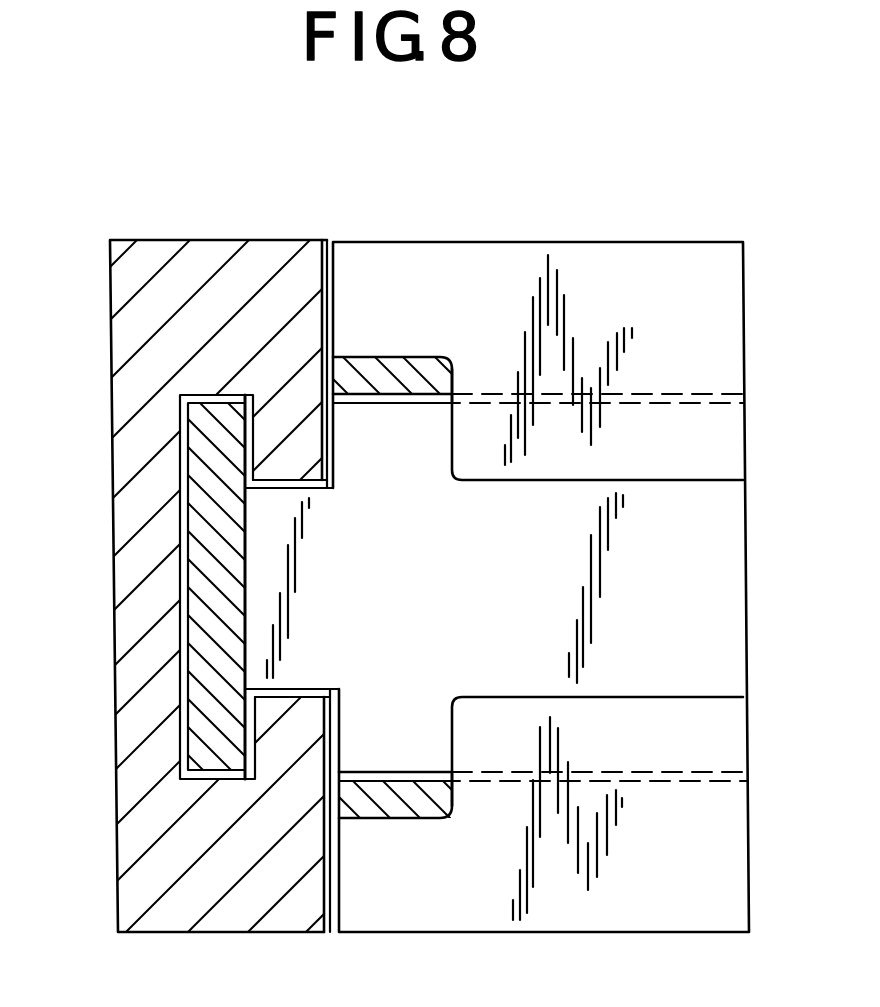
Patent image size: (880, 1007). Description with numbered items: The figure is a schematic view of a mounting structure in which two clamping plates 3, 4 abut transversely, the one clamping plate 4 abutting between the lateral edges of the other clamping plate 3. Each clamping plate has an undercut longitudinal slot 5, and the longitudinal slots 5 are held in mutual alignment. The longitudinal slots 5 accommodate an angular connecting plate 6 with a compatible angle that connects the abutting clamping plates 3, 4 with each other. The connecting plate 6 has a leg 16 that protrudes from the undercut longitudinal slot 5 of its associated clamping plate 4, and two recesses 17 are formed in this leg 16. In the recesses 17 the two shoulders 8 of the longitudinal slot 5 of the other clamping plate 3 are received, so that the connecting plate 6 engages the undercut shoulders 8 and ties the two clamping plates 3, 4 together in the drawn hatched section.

The clamping plate 3 is at (137, 315).
The clamping plate 4 is at (633, 298).
The longitudinal slot 5 is at (188, 737).
The connecting plate 6 is at (205, 548).
The shoulder 8 is at (298, 445).
The leg 16 is at (696, 568).
The recess 17 is at (333, 450).